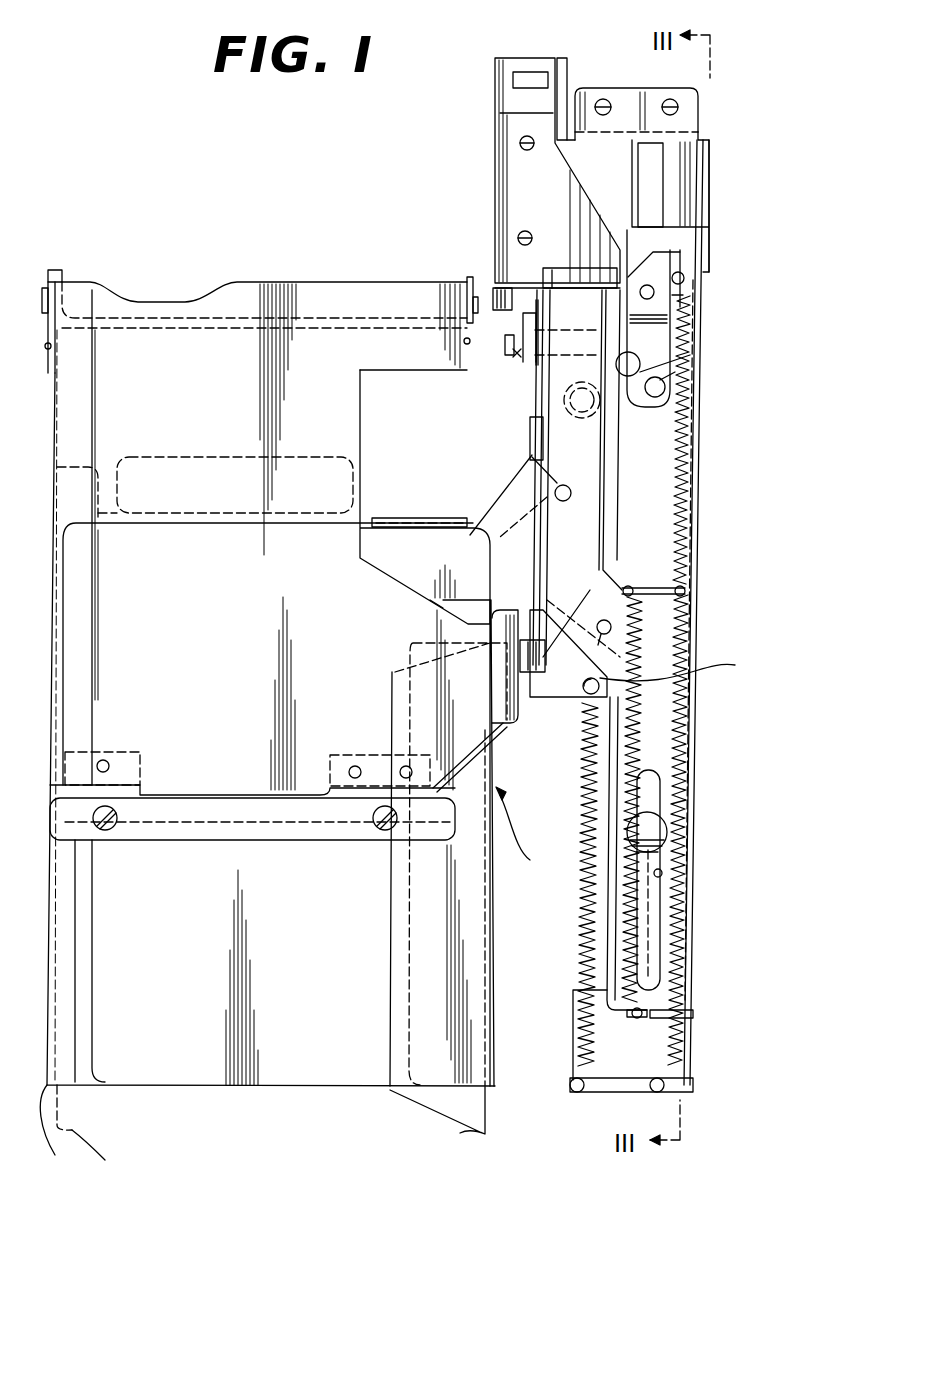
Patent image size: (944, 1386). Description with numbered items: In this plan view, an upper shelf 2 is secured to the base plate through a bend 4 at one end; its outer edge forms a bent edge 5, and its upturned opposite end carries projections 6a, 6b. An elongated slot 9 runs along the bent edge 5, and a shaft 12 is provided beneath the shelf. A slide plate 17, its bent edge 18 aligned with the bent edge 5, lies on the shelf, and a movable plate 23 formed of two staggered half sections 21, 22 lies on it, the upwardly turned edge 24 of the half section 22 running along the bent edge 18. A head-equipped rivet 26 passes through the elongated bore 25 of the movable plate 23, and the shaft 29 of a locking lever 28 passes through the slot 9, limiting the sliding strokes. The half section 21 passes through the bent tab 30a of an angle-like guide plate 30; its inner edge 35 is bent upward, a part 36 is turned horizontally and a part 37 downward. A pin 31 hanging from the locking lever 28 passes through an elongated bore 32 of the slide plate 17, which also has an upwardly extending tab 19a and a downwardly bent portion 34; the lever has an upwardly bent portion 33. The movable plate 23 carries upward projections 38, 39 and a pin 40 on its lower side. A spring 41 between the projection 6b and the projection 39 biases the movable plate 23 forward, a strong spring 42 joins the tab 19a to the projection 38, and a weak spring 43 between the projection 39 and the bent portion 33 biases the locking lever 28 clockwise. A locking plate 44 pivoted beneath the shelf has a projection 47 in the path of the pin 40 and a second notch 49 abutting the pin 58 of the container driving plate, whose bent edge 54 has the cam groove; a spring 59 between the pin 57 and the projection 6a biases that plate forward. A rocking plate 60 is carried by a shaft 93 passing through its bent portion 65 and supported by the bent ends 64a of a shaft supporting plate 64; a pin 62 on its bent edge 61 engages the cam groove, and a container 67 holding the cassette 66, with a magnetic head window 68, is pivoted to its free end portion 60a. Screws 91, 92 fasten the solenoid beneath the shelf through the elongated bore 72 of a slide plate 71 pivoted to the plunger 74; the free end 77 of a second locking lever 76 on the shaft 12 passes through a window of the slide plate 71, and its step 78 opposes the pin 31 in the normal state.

The upper shelf 2 is at (700, 160).
The bend 4 is at (700, 115).
The bent edge 5 is at (710, 212).
The upwardly extending projection 6a is at (572, 1092).
The upwardly extending projection 6b is at (665, 1080).
The elongated slot 9 is at (660, 187).
The shaft 12 is at (660, 368).
The slide plate 17 is at (675, 508).
The bent edge 18 is at (700, 490).
The upwardly extending tab 19a is at (637, 1020).
The half section 21 is at (585, 290).
The half section 22 is at (600, 985).
The movable plate 23 is at (683, 664).
The upwardly turned edge 24 is at (700, 755).
The elongated bore 25 is at (663, 873).
The head-equipped rivet 26 is at (660, 832).
The locking lever 28 is at (668, 250).
The shaft 29 is at (655, 292).
The angle-like guide plate 30 is at (497, 155).
The bent tab 30a is at (500, 295).
The pin 31 is at (666, 390).
The elongated bore 32 is at (673, 378).
The upwardly bent portion 33 is at (690, 270).
The downwardly bent portion 34 is at (607, 840).
The inner edge 35 is at (540, 405).
The turned portion 36 is at (490, 515).
The downwardly turned part 37 is at (405, 518).
The upward projection 38 is at (630, 588).
The upward projection 39 is at (690, 590).
The pin 40 is at (581, 623).
The spring 41 is at (690, 1018).
The strong spring 42 is at (652, 915).
The weak spring 43 is at (692, 545).
The locking plate 44 is at (550, 560).
The projection 47 is at (692, 440).
The second notch 49 is at (557, 483).
The bent edge 54 is at (533, 445).
The pin 57 is at (600, 690).
The pin 58 is at (563, 501).
The spring 59 is at (582, 800).
The rocking plate 60 is at (178, 669).
The free end portion 60a is at (222, 795).
The bent edge 61 is at (520, 722).
The pin 62 is at (535, 672).
The shaft supporting plate 64 is at (225, 290).
The bent ends 64a is at (468, 280).
The bent portion 65 is at (464, 342).
The cassette 66 is at (93, 1134).
The container 67 is at (60, 1134).
The window 68 is at (530, 830).
The slide plate 71 is at (565, 60).
The elongated bore 72 is at (515, 80).
The plunger 74 is at (508, 325).
The second locking lever 76 is at (598, 345).
The free end 77 is at (520, 362).
The step 78 is at (640, 358).
The screw 91 is at (520, 235).
The screw 92 is at (522, 140).
The shaft 93 is at (55, 272).